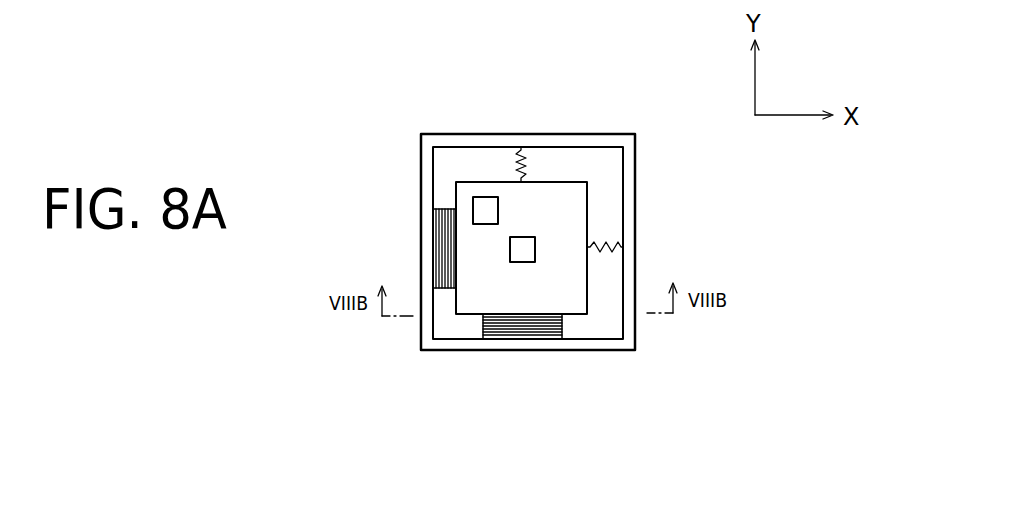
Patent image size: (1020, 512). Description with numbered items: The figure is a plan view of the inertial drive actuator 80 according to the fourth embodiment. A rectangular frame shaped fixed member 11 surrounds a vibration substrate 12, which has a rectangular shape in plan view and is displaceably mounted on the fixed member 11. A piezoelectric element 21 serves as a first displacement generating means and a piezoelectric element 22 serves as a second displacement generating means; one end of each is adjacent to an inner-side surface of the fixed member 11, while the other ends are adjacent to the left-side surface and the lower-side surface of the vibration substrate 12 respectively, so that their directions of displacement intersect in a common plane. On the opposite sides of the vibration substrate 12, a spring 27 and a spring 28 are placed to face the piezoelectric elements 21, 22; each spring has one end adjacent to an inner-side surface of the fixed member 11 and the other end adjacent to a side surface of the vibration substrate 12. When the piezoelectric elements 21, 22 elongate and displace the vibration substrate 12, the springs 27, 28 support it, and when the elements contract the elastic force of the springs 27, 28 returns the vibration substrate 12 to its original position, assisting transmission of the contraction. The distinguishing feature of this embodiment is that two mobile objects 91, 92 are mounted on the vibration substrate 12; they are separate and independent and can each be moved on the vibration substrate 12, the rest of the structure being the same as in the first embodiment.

The inertial drive actuator 80 is at (542, 482).
The fixed member 11 is at (427, 163).
The vibration substrate 12 is at (472, 300).
The piezoelectric element 21 is at (440, 253).
The piezoelectric element 22 is at (507, 327).
The spring 27 is at (522, 153).
The spring 28 is at (617, 247).
The mobile object 91 is at (525, 252).
The mobile object 92 is at (482, 211).